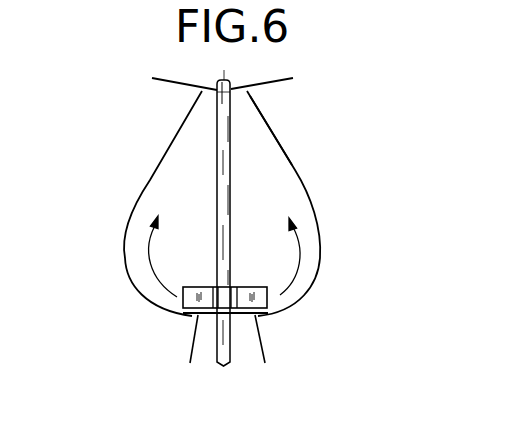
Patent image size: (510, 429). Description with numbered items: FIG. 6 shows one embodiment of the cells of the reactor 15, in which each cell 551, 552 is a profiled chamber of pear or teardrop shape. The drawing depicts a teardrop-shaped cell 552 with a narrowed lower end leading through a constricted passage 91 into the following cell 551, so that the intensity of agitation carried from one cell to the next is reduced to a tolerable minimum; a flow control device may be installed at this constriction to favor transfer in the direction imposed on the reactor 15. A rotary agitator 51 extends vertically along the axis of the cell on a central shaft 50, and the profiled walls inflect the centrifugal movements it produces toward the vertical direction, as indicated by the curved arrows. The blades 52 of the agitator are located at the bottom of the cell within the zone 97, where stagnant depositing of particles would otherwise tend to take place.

The reactor 15 is at (150, 141).
The central tube 50 is at (231, 126).
The rotary agitator 51 is at (208, 102).
The blades 52 is at (255, 297).
The cell 552 is at (292, 165).
The cell 551 is at (187, 361).
The passage 91 is at (197, 317).
The zone 97 is at (192, 313).